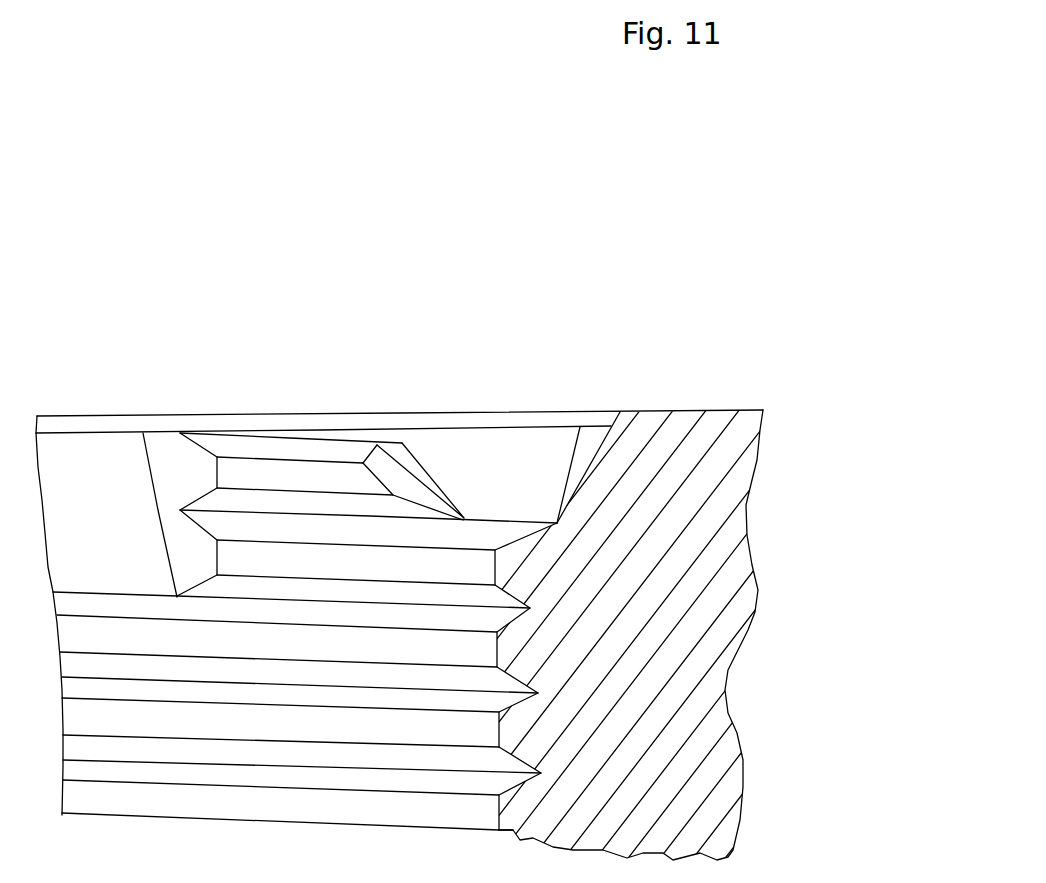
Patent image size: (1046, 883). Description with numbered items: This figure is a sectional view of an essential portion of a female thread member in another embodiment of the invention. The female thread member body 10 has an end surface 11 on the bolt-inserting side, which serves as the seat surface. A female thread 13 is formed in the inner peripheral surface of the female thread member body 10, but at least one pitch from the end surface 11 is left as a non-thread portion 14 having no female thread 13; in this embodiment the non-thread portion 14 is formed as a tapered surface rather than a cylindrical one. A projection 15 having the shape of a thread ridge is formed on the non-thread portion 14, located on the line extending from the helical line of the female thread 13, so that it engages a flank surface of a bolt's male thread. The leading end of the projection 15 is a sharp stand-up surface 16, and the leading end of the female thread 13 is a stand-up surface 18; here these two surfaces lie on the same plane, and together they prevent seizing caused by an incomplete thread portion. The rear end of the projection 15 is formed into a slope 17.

The female thread member body 10 is at (670, 653).
The end surface 11 is at (690, 411).
The female thread 13 is at (290, 558).
The non-thread portion 14 is at (85, 460).
The projection 15 is at (322, 477).
The stand-up surface 16 is at (202, 472).
The slope 17 is at (407, 482).
The stand-up surface 18 is at (205, 557).